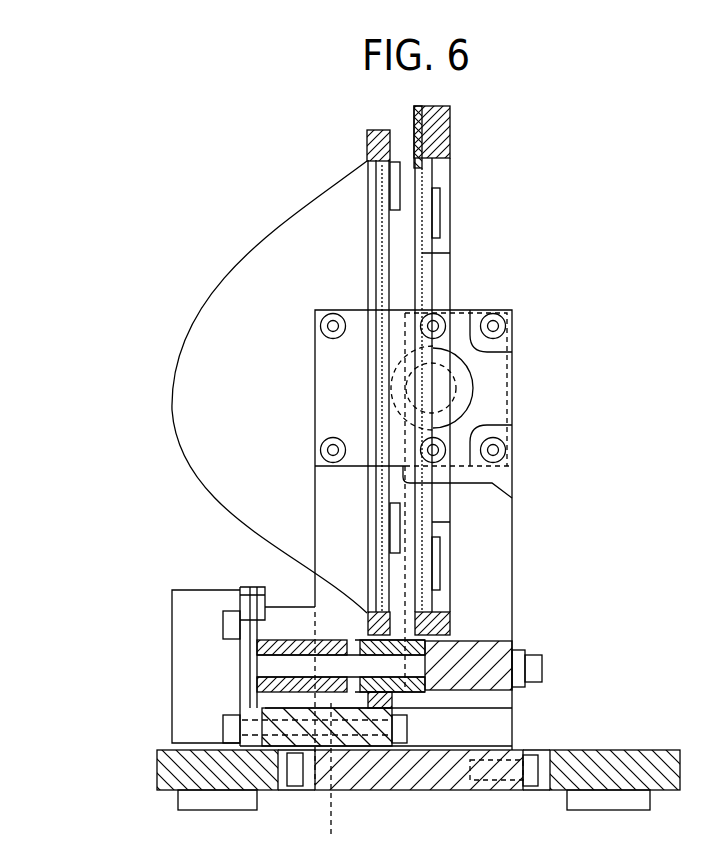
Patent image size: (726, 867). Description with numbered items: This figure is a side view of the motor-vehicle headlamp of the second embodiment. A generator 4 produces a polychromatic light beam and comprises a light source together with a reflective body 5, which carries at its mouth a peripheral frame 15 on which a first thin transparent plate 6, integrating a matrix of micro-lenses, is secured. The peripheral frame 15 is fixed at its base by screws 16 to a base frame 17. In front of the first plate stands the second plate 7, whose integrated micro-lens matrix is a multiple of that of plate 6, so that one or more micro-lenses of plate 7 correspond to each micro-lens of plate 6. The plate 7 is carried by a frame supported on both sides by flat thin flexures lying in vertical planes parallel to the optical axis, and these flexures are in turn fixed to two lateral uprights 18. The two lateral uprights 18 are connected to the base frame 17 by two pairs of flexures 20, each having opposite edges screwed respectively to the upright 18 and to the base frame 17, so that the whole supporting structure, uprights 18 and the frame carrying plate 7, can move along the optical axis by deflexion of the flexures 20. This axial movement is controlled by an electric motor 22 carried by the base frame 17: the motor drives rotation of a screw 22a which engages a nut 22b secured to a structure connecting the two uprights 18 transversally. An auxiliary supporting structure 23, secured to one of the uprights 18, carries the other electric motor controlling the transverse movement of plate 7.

The generator 4 is at (258, 260).
The reflective body 5 is at (190, 325).
The first thin transparent plate 6 is at (385, 265).
The second plate 7 is at (425, 265).
The peripheral frame 15 is at (375, 145).
The screws 16 is at (445, 130).
The base frame 17 is at (405, 767).
The lateral uprights 18 is at (485, 515).
The flexures 20 is at (512, 706).
The electric motor 22 is at (178, 642).
The screw 22a is at (287, 640).
The nut 22b is at (420, 643).
The auxiliary supporting structure 23 is at (512, 357).